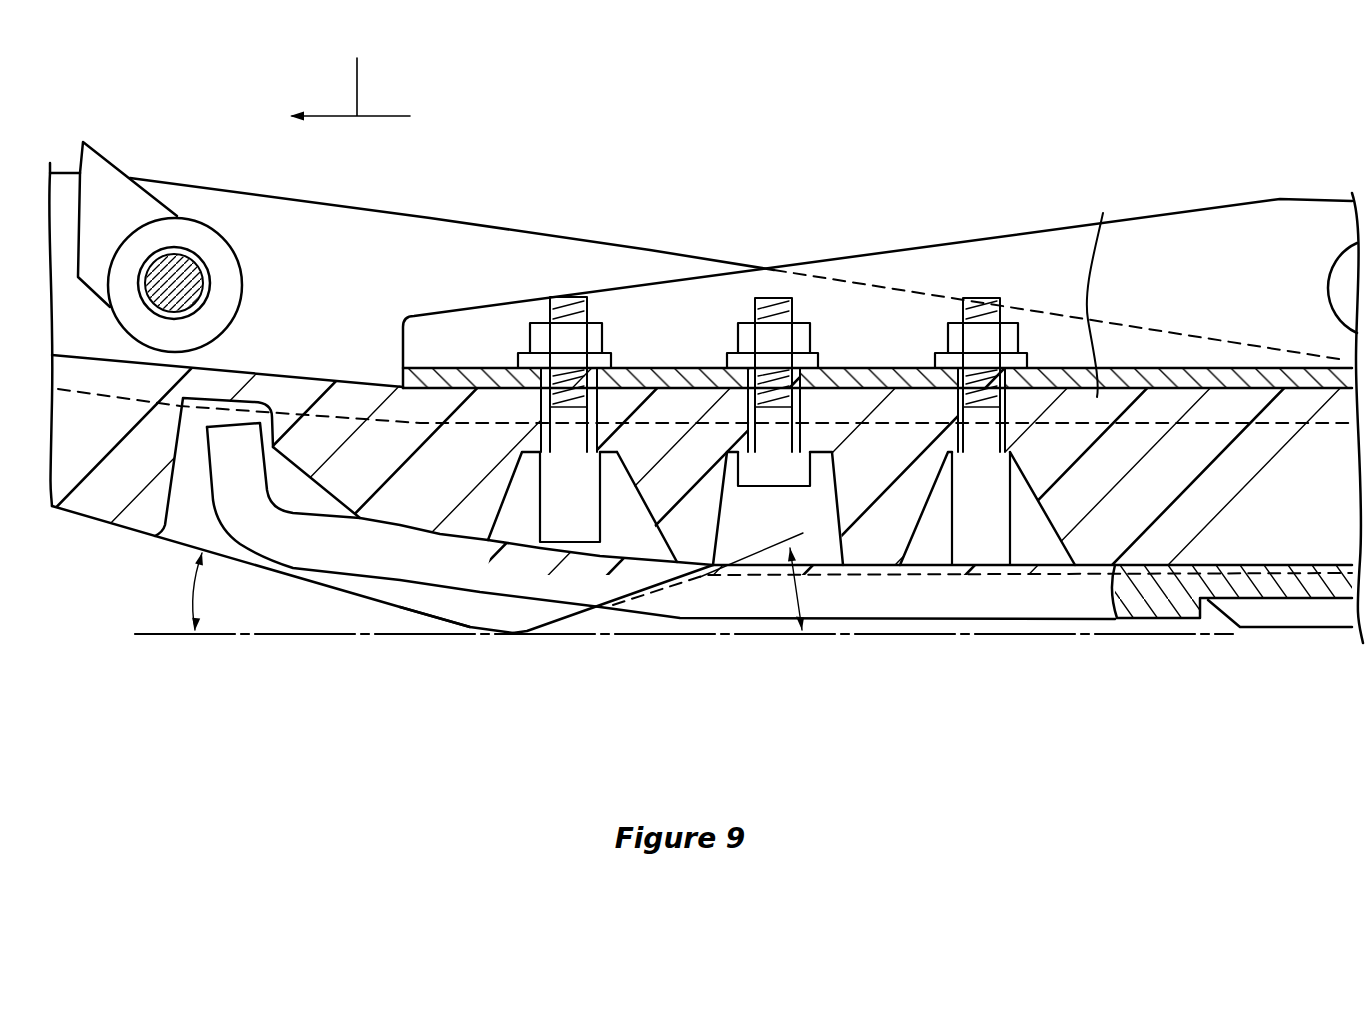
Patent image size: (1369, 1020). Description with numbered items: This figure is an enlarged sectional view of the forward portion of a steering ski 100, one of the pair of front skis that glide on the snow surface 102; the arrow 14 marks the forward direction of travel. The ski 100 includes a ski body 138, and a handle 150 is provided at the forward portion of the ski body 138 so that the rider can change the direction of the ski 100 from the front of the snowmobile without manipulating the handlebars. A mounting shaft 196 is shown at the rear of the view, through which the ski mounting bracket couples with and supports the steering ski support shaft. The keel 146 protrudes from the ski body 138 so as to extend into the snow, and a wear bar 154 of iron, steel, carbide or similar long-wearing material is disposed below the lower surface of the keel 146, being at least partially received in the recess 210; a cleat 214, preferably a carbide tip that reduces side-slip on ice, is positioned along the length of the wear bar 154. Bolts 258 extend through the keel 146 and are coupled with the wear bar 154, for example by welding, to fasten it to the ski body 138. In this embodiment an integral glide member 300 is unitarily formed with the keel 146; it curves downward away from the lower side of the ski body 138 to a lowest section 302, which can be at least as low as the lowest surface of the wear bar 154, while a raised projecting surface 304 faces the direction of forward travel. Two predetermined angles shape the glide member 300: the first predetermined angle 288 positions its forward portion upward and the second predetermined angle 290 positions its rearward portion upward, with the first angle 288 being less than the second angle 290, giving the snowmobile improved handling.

The forward direction arrow 14 is at (350, 75).
The front ski 100 is at (1203, 160).
The snow surface 102 is at (907, 630).
The ski body 138 is at (1146, 375).
The keel 146 is at (1060, 510).
The handle 150 is at (108, 183).
The wear bar 154 is at (722, 603).
The mounting shaft 196 is at (1335, 295).
The recess 210 is at (1163, 567).
The cleat 214 is at (1277, 615).
The bolt 258 is at (564, 297).
The first predetermined angle 288 is at (190, 587).
The second predetermined angle 290 is at (803, 620).
The integral glide member 300 is at (446, 632).
The lowest section 302 is at (506, 620).
The raised projecting surface 304 is at (407, 610).